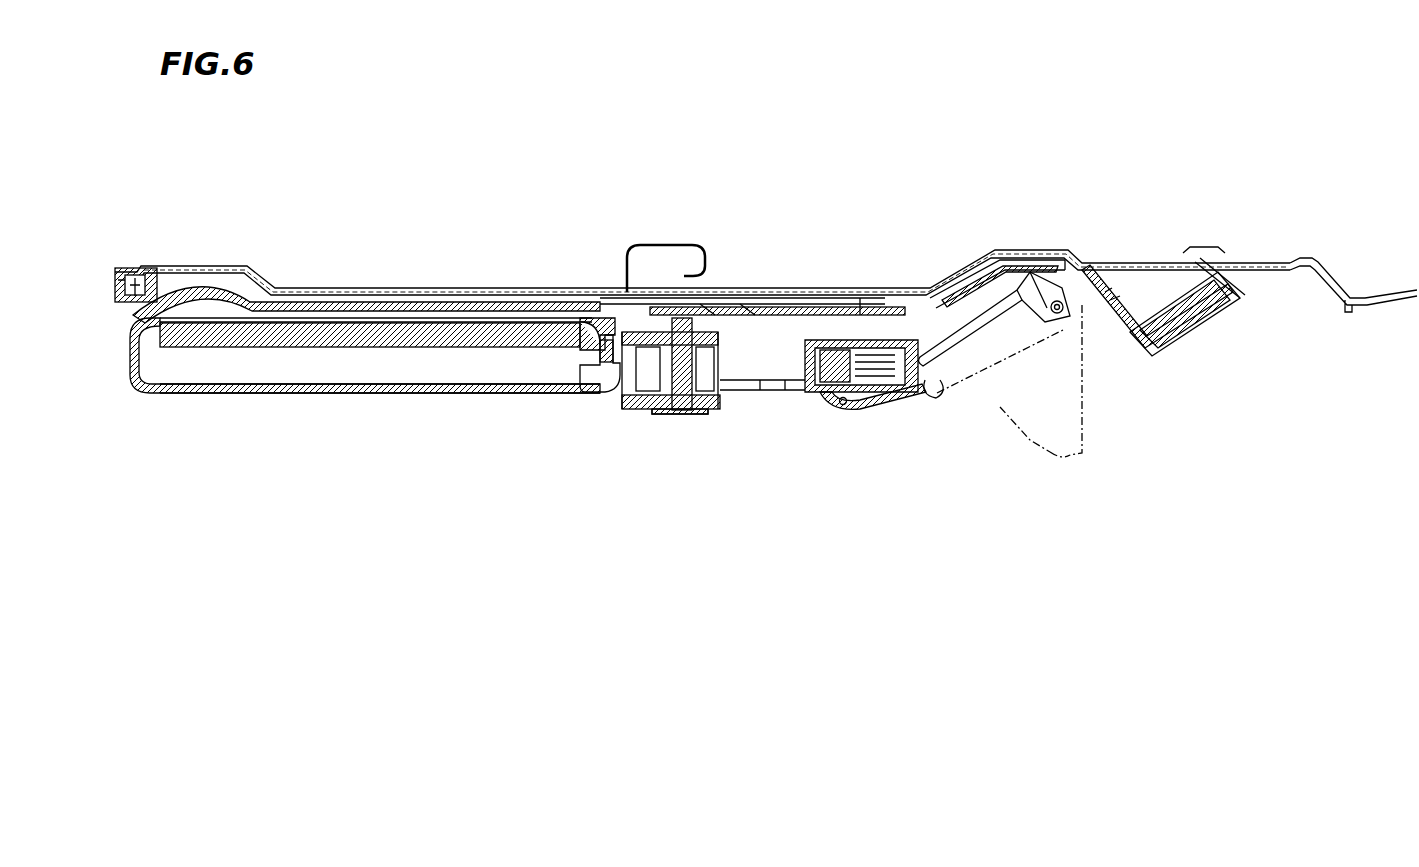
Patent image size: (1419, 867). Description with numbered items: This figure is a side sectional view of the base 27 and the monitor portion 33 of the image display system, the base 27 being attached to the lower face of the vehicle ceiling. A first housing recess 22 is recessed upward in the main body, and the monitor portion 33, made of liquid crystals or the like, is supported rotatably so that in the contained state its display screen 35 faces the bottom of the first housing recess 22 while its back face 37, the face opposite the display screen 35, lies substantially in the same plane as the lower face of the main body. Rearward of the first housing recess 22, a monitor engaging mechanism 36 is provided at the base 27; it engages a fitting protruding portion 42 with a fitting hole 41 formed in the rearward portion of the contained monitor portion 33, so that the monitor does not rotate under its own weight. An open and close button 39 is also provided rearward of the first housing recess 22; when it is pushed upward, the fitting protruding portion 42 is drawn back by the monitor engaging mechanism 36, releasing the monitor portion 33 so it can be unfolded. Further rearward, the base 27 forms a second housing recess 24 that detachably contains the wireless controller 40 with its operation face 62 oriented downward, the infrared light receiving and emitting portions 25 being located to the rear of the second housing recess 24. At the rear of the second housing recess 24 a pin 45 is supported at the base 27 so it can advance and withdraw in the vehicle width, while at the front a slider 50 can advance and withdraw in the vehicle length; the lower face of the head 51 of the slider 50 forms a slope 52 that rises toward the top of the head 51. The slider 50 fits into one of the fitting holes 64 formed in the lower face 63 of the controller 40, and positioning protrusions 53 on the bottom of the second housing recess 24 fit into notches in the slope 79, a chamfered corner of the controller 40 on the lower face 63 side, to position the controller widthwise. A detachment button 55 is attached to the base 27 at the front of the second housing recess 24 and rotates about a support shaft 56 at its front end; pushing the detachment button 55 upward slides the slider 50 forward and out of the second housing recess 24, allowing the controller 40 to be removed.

The first housing recess 22 is at (291, 326).
The second housing recess 24 is at (990, 294).
The infrared light receiving and emitting portions 25 is at (1205, 333).
The base 27 is at (209, 262).
The monitor portion 33 is at (362, 397).
The display screen 35 is at (332, 301).
The monitor engaging mechanism 36 is at (628, 399).
The back face 37 is at (428, 396).
The open and close button 39 is at (683, 416).
The controller 40 is at (954, 400).
The fitting hole 41 is at (577, 366).
The fitting protruding portion 42 is at (585, 372).
The pin 45 is at (1058, 300).
The slider 50 is at (905, 350).
The head 51 is at (926, 340).
The slope 52 is at (937, 393).
The positioning protrusions 53 is at (956, 326).
The detachment button 55 is at (846, 414).
The support shaft 56 is at (839, 393).
The operation face 62 is at (970, 384).
The lower face 63 is at (1075, 456).
The fitting holes 64 is at (897, 393).
The slope 79 is at (937, 393).